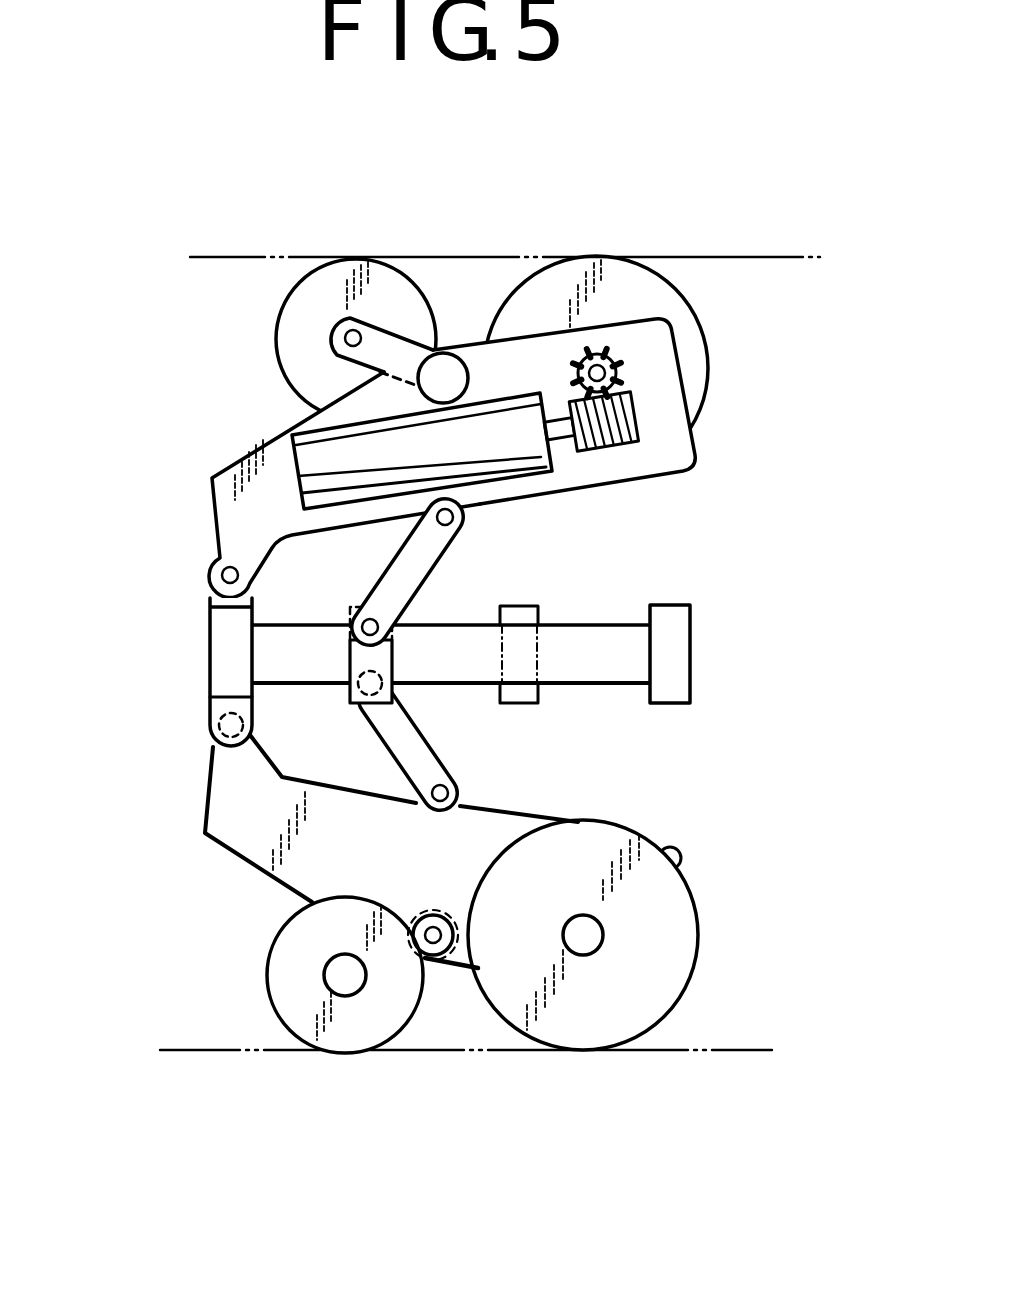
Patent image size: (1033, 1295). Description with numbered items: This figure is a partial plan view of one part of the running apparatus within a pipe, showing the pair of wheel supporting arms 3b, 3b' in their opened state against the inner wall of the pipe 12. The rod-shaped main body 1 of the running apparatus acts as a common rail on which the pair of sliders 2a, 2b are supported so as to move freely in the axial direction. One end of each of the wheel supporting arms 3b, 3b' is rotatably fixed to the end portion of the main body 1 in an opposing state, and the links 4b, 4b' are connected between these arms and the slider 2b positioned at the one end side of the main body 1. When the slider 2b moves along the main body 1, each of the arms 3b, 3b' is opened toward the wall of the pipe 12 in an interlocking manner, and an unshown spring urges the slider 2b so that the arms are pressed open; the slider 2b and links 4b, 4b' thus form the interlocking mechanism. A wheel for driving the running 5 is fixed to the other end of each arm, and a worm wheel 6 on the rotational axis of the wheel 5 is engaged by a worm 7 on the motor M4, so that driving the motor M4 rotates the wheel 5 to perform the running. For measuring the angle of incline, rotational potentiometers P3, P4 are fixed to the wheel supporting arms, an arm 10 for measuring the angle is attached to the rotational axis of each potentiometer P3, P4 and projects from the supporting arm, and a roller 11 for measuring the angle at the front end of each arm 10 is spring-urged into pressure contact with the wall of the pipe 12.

The main body of the running apparatus 1 is at (690, 662).
The slider 2a is at (525, 705).
The slider 2b is at (350, 660).
The wheel supporting arm 3b is at (354, 843).
The wheel supporting arm 3b' is at (432, 458).
The link 4b is at (283, 706).
The link 4b' is at (474, 572).
The wheel for driving the running 5 is at (700, 317).
The worm wheel 6 is at (620, 366).
The worm 7 is at (634, 395).
The arm for measuring an angle 10 is at (378, 342).
The roller for measuring an angle 11 is at (345, 285).
The pipe 12 is at (638, 255).
The motor M4 is at (517, 430).
The rotational potentiometer P3 is at (458, 962).
The rotational potentiometer P4 is at (445, 362).